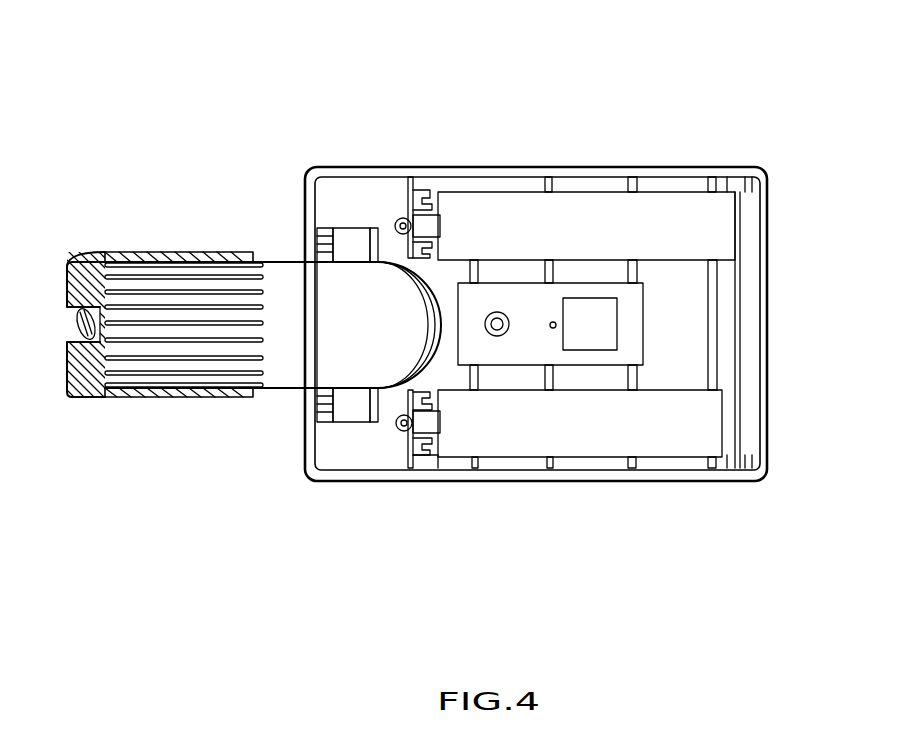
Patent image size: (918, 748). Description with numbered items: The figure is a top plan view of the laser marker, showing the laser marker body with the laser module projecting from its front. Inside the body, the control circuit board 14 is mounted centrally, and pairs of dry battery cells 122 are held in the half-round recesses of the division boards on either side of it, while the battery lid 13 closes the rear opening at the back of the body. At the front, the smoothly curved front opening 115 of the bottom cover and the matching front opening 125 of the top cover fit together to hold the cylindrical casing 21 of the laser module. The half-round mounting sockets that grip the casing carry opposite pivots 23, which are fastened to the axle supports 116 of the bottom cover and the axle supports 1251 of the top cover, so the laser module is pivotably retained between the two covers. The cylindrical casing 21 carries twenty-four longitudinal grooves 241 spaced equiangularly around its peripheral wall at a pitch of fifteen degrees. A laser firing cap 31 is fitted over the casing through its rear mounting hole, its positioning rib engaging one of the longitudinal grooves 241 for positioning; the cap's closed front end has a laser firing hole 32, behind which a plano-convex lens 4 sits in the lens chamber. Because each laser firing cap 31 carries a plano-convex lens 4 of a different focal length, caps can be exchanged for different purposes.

The plano-convex lens 4 is at (143, 343).
The battery lid 13 is at (752, 434).
The control circuit board 14 is at (632, 335).
The cylindrical casing 21 is at (301, 235).
The pivots 23 is at (357, 413).
The laser firing cap 31 is at (90, 392).
The laser firing hole 32 is at (65, 327).
The front opening 115 is at (437, 218).
The axle supports 116 is at (332, 423).
The dry battery cells 122 is at (665, 197).
The front opening 125 is at (432, 290).
The longitudinal grooves 241 is at (180, 280).
The axle supports 1251 is at (328, 233).